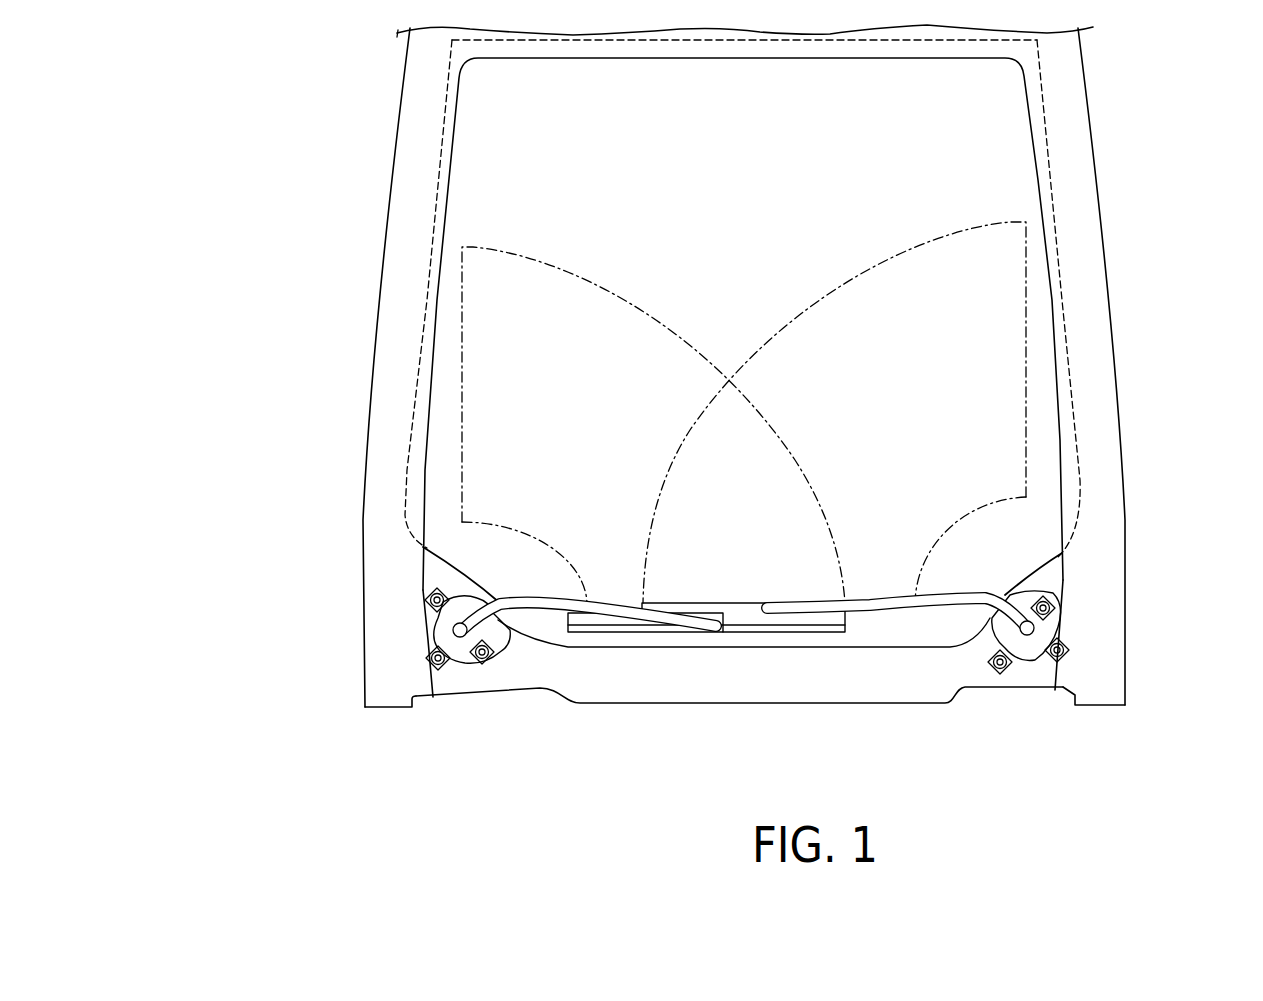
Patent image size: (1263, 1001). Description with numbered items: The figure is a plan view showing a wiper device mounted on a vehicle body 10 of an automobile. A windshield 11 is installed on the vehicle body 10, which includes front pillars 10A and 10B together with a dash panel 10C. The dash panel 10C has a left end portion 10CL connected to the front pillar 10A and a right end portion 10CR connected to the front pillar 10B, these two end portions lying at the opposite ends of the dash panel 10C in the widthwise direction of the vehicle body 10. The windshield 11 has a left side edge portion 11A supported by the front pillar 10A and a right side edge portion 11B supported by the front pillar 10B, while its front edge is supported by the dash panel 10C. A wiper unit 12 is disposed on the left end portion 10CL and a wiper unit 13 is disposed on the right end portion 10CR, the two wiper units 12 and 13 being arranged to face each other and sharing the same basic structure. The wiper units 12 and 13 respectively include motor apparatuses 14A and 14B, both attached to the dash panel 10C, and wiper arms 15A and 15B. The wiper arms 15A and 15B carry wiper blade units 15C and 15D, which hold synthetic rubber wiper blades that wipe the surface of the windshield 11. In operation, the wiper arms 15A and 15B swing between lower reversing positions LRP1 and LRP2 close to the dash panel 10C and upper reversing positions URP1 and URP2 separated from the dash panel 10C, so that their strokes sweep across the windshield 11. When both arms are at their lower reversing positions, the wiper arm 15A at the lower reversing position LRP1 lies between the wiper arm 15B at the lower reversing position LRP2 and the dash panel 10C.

The vehicle body 10 is at (1142, 582).
The front pillar 10A is at (386, 336).
The front pillar 10B is at (1102, 344).
The dash panel 10C is at (755, 694).
The left end portion 10CL is at (443, 683).
The right end portion 10CR is at (1037, 677).
The windshield 11 is at (480, 88).
The left side edge portion 11A is at (425, 270).
The right side edge portion 11B is at (1057, 224).
The wiper unit 12 is at (423, 547).
The wiper unit 13 is at (1062, 553).
The motor apparatus 14A is at (462, 672).
The motor apparatus 14B is at (1013, 679).
The wiper arm 15A is at (507, 572).
The wiper arm 15B is at (1049, 570).
The wiper blade unit 15C is at (810, 628).
The wiper blade unit 15D is at (715, 613).
The upper reversing position URP1 is at (466, 238).
The upper reversing position URP2 is at (1010, 216).
The lower reversing position LRP1 is at (628, 640).
The lower reversing position LRP2 is at (878, 620).